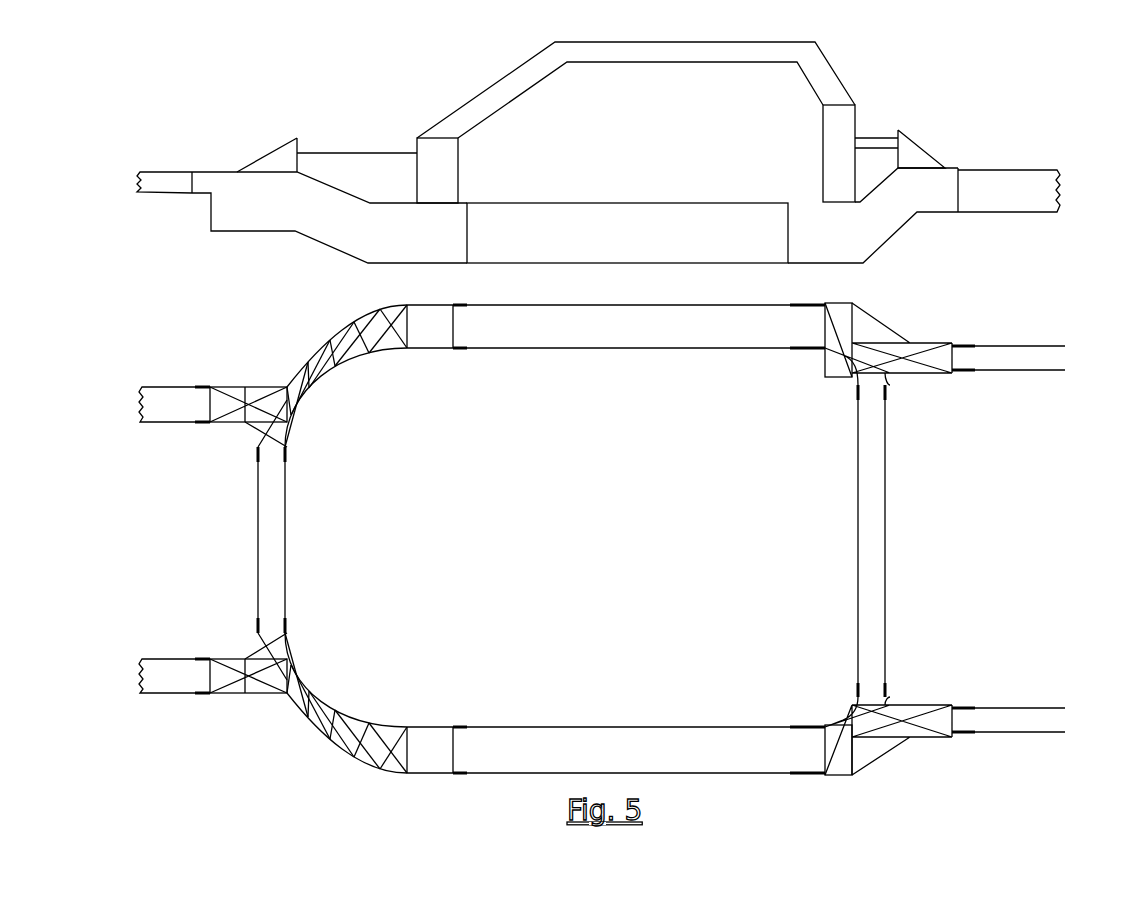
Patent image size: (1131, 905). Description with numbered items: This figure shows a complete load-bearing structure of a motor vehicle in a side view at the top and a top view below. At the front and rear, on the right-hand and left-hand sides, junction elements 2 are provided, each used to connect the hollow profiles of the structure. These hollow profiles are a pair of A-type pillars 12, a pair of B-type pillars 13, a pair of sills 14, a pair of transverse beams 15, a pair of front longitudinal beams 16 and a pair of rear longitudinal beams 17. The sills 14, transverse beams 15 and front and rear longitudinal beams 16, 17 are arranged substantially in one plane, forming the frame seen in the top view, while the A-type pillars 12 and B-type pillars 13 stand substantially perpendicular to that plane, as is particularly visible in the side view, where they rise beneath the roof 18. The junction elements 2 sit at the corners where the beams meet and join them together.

The junction element 2 is at (245, 647).
The A-type pillar 12 is at (463, 169).
The B-type pillar 13 is at (820, 152).
The sill 14 is at (580, 240).
The transverse beam 15 is at (292, 528).
The front longitudinal beam 16 is at (172, 197).
The rear longitudinal beam 17 is at (1040, 220).
The roof 18 is at (497, 73).